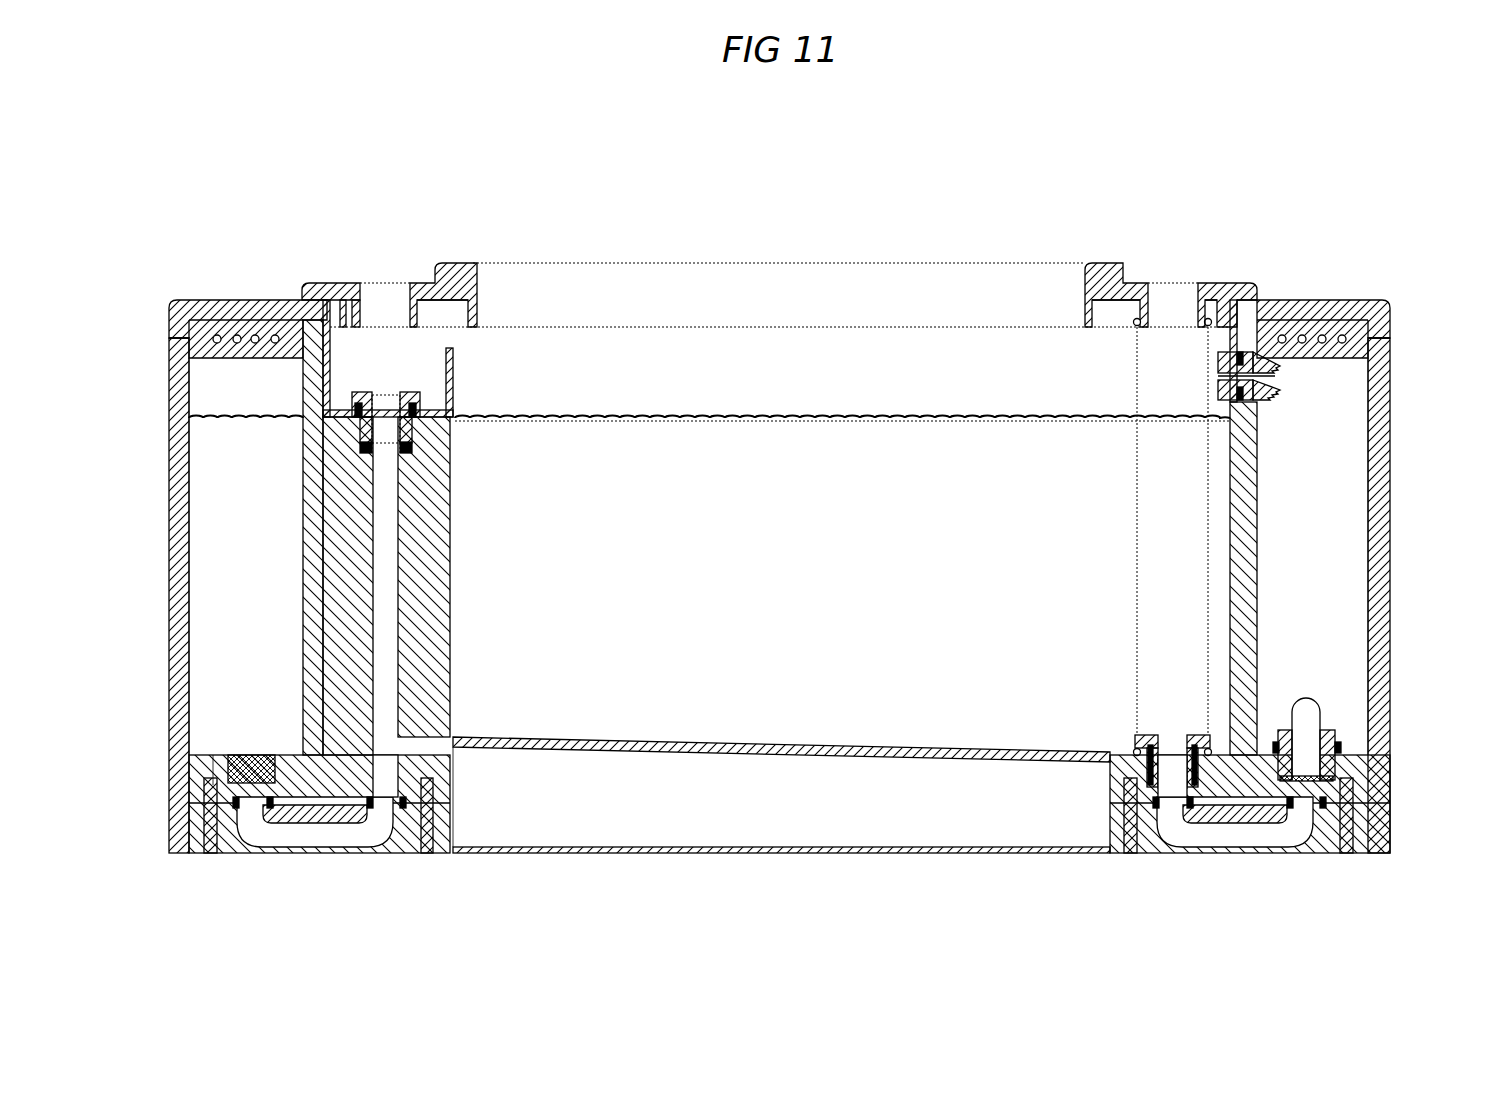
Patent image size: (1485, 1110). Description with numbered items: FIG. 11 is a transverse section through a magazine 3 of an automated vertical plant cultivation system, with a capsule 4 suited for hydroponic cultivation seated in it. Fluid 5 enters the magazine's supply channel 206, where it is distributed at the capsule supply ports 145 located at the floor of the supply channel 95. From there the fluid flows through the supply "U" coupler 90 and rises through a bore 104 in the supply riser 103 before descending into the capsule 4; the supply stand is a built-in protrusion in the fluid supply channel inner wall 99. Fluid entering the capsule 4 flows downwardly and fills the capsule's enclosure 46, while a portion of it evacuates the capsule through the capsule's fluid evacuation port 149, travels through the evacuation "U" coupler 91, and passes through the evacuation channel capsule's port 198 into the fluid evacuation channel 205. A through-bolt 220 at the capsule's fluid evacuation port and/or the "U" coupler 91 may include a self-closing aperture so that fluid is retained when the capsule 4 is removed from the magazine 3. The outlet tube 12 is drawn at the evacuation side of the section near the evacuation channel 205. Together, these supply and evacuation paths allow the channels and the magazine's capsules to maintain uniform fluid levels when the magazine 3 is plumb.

The magazine 3 is at (250, 85).
The capsule 4 is at (781, 697).
The capsule's enclosure 46 is at (839, 551).
The fluid 5 is at (228, 420).
The outlet tube 12 is at (1306, 712).
The supply "U" coupler 90 is at (314, 840).
The evacuation "U" coupler 91 is at (1236, 840).
The floor of the supply channel 95 is at (213, 755).
The fluid supply channel inner wall 99 is at (303, 545).
The supply riser 103 is at (423, 622).
The bore 104 is at (446, 762).
The capsule supply ports 145 is at (262, 755).
The capsule's fluid evacuation port 149 is at (1173, 740).
The evacuation channel capsule's port 198 is at (1340, 746).
The fluid evacuation channel 205 is at (1350, 630).
The supply channel 206 is at (218, 614).
The through-bolt 220 is at (408, 392).